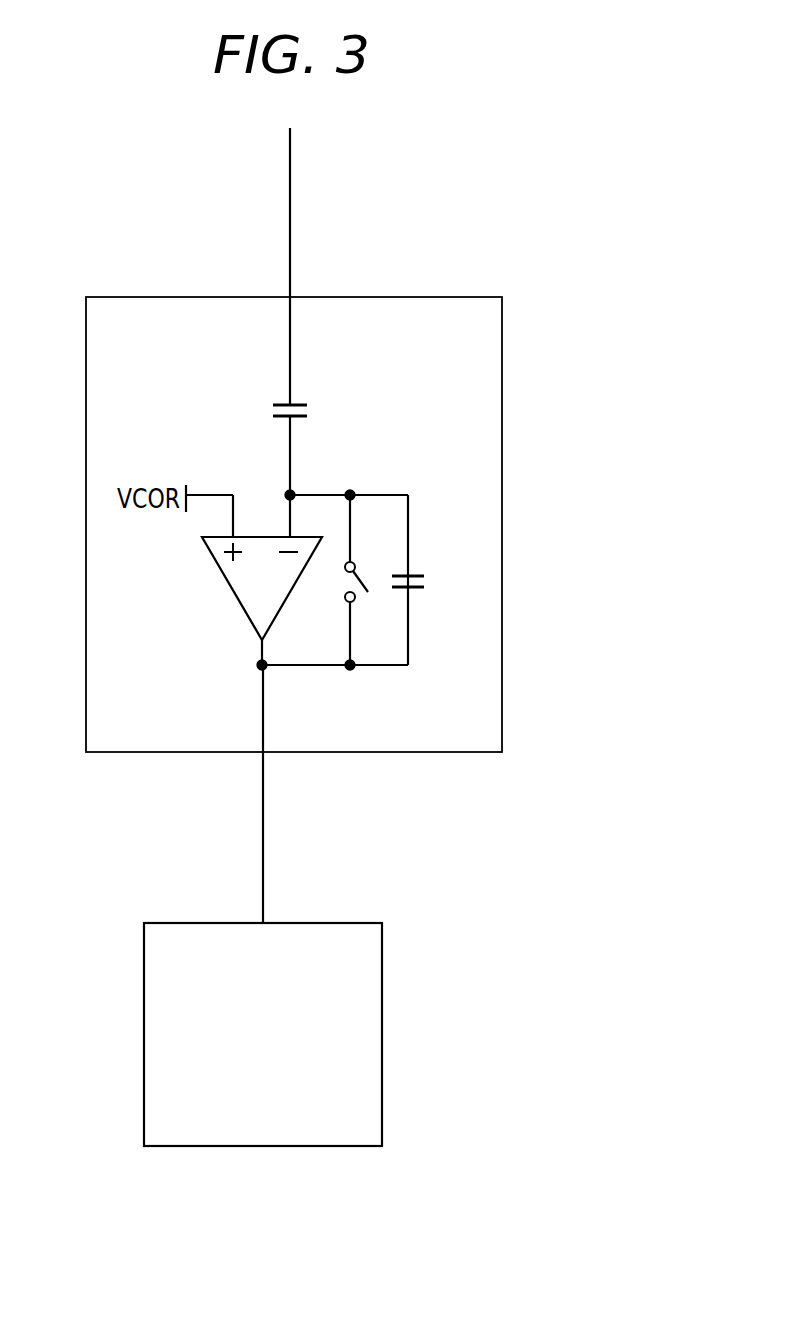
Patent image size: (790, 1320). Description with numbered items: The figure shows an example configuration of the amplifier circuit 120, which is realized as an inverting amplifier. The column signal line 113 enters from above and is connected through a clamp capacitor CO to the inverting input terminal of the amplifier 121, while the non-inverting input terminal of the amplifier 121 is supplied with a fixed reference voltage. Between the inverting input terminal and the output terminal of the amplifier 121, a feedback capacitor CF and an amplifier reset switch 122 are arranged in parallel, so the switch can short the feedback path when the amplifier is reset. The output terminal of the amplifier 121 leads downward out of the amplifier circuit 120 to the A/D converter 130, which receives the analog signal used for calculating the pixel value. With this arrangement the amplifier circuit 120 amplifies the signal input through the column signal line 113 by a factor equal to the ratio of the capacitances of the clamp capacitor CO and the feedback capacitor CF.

The column signal line 113 is at (290, 237).
The amplifier circuit 120 is at (502, 480).
The clamp capacitor CO is at (308, 411).
The amplifier 121 is at (238, 603).
The amplifier reset switch 122 is at (345, 587).
The feedback capacitor CF is at (425, 582).
The A/D converter 130 is at (382, 1030).